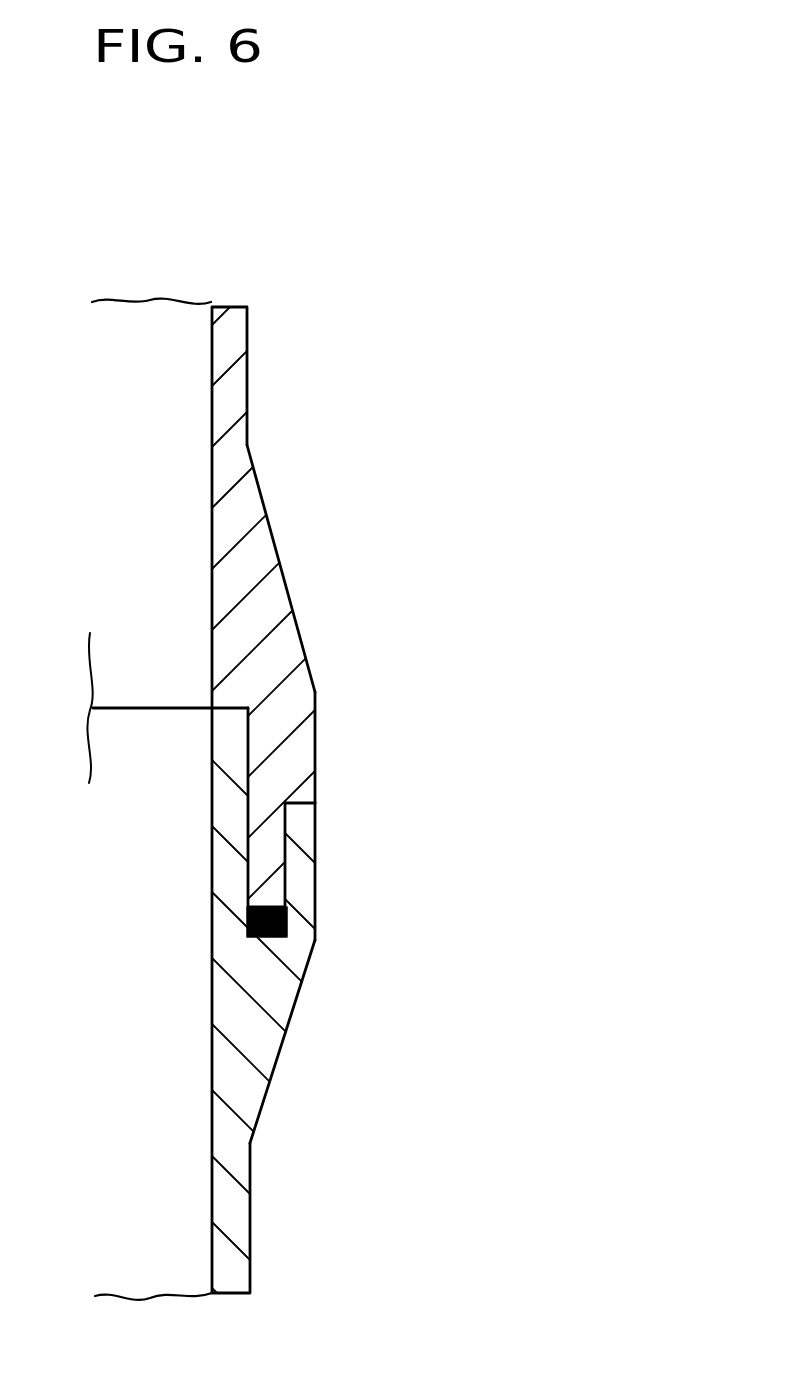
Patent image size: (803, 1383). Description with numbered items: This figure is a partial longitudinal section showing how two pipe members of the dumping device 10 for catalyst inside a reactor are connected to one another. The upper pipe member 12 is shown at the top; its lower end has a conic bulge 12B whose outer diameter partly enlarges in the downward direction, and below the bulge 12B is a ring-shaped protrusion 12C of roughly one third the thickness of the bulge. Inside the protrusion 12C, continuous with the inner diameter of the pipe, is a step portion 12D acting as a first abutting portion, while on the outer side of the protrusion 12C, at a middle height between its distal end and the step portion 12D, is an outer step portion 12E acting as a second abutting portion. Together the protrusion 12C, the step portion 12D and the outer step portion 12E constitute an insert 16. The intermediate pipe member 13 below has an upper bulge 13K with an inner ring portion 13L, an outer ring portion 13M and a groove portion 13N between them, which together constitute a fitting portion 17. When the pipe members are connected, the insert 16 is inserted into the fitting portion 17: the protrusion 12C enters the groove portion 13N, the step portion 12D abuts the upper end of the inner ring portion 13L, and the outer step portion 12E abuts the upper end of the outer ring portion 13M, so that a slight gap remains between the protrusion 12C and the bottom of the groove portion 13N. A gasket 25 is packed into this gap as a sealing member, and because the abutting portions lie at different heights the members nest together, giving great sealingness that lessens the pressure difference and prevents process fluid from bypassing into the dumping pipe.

The dumping device 10 is at (291, 282).
The upper pipe member 12 is at (248, 373).
The conic bulge 12B is at (274, 603).
The ring-shaped protrusion 12C is at (264, 868).
The step portion 12D is at (231, 710).
The outer step portion 12E is at (304, 810).
The intermediate pipe member 13 is at (252, 1217).
The upper bulge 13K is at (248, 1033).
The inner ring portion 13L is at (228, 795).
The outer ring portion 13M is at (304, 842).
The groove portion 13N is at (291, 921).
The insert 16 is at (313, 680).
The fitting portion 17 is at (295, 1015).
The gasket 25 is at (245, 920).